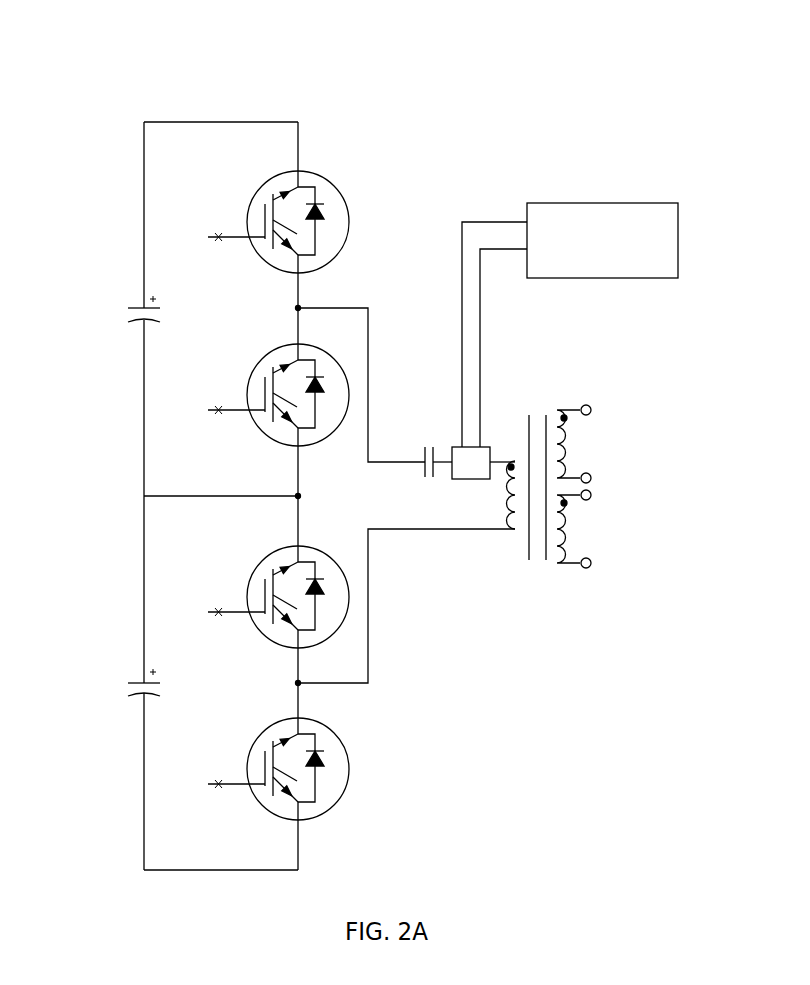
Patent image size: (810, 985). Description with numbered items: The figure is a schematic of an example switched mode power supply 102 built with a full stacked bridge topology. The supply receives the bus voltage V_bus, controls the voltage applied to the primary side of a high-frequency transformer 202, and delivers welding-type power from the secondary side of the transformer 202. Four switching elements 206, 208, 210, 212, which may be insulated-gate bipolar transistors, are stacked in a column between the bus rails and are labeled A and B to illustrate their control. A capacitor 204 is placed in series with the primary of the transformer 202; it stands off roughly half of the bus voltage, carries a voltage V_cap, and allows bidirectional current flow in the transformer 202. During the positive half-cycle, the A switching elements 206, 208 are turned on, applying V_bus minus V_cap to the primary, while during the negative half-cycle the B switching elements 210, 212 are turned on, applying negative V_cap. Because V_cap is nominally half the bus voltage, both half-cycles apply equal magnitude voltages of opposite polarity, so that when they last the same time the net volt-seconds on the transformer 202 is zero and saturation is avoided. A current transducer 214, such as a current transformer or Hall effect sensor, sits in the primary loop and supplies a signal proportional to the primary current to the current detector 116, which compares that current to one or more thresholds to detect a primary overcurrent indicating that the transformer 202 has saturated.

The switched mode power supply 102 is at (96, 29).
The current detector 116 is at (680, 203).
The high-frequency transformer 202 is at (586, 394).
The capacitor 204 is at (428, 443).
The switching element 206 is at (342, 196).
The switching element 208 is at (338, 738).
The switching element 210 is at (283, 343).
The switching element 212 is at (257, 576).
The current transducer 214 is at (472, 480).